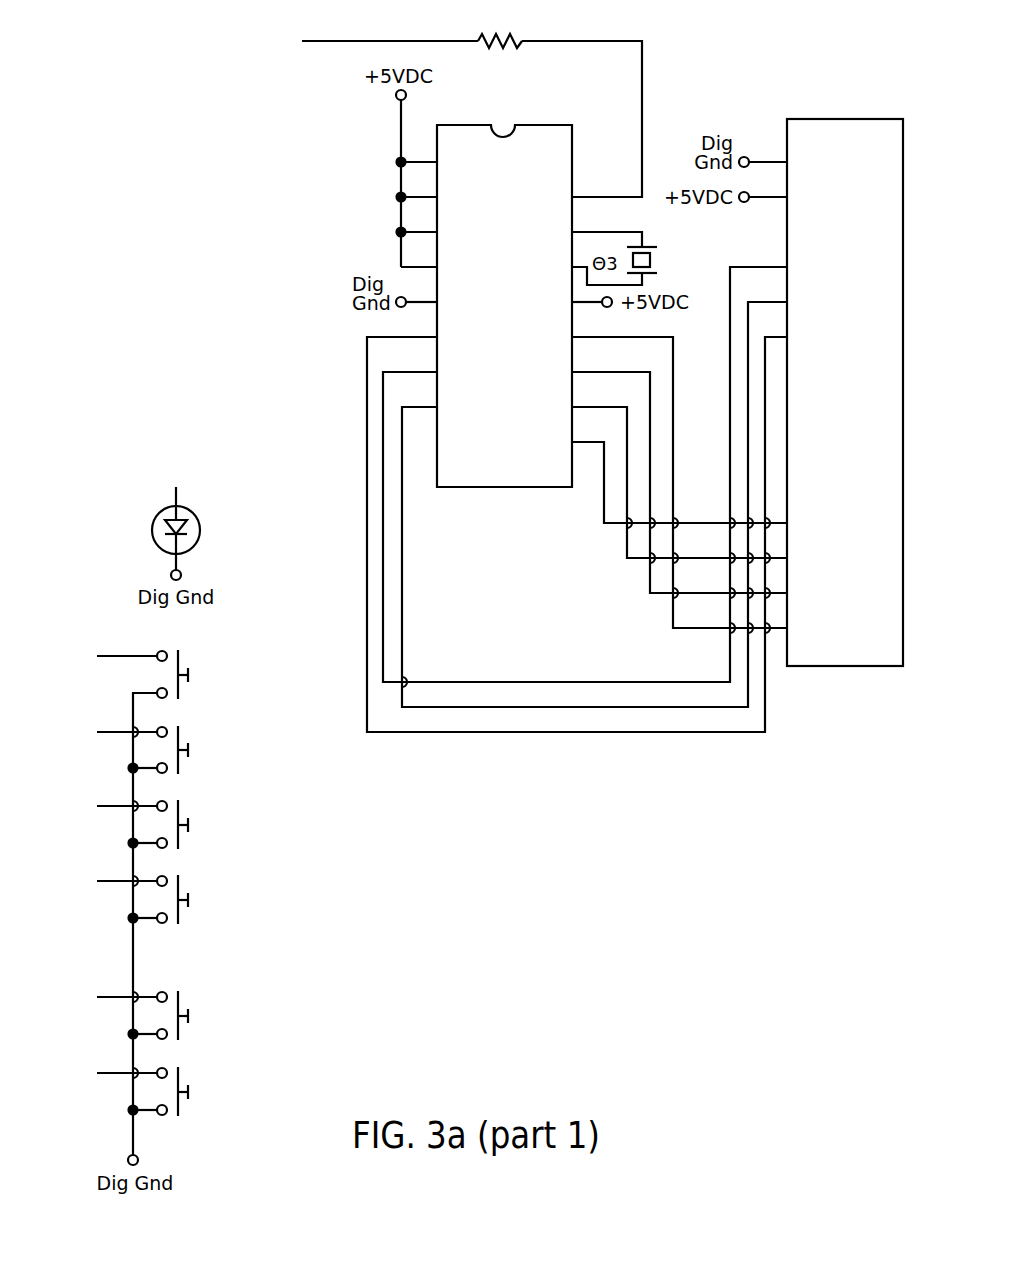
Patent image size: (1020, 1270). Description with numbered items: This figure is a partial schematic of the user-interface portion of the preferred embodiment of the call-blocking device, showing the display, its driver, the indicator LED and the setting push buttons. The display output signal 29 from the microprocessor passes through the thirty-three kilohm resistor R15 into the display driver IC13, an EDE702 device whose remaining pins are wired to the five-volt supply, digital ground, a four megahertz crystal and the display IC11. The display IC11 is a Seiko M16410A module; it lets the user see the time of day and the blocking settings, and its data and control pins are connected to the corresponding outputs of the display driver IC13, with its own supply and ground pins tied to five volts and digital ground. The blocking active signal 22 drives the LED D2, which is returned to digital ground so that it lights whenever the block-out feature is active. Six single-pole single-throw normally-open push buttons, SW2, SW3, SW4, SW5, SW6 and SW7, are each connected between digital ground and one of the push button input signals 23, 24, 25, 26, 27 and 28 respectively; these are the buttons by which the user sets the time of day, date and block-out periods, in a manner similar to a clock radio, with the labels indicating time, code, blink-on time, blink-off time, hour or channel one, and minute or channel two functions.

The Blocking Active 22 is at (167, 492).
The Push Button Inputs 23 is at (106, 656).
The Push Button Inputs 24 is at (106, 732).
The Push Button Inputs 25 is at (106, 806).
The Push Button Inputs 26 is at (106, 881).
The Push Button Inputs 27 is at (106, 997).
The Push Button Inputs 28 is at (106, 1073).
The Display 29 is at (367, 42).
The 33K resistor R15 is at (500, 56).
The LED D2 is at (216, 534).
The Display Driver IC13 is at (505, 306).
The Display IC11 is at (837, 392).
The SPST-NO push button switch SW2 is at (232, 674).
The SPST-NO push button switch SW3 is at (234, 750).
The SPST-NO push button switch SW4 is at (267, 824).
The SPST-NO push button switch SW5 is at (268, 899).
The SPST-NO push button switch SW6 is at (243, 1015).
The SPST-NO push button switch SW7 is at (249, 1091).